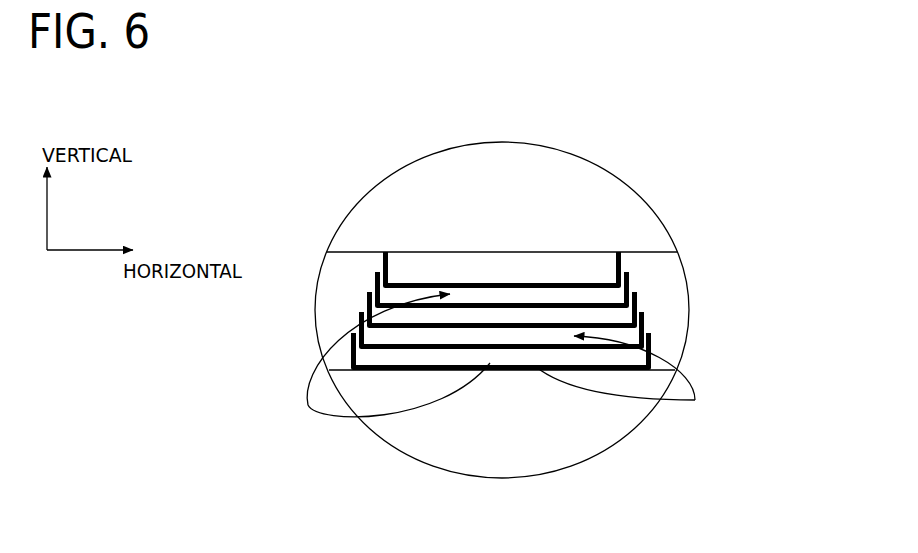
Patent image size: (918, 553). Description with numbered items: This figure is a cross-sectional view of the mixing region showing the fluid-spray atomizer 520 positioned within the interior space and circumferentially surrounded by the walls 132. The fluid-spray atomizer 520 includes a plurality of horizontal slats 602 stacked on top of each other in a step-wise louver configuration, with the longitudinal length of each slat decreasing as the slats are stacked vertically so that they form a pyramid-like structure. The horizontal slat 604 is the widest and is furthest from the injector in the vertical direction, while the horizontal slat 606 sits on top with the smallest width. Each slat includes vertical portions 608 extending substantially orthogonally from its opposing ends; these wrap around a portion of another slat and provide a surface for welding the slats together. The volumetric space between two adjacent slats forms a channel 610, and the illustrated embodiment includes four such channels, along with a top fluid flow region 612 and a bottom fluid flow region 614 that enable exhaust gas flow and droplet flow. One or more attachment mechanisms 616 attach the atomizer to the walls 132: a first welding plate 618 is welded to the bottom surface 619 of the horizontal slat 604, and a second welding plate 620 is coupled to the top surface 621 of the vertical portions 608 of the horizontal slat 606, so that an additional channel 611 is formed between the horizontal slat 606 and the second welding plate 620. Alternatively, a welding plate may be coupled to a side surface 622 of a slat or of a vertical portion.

The walls 132 is at (493, 142).
The fluid-spray atomizer 520 is at (748, 247).
The horizontal slats 602 is at (685, 280).
The horizontal slat 604 is at (527, 377).
The horizontal slat 606 is at (505, 283).
The vertical portions 608 is at (380, 267).
The channels 610 is at (504, 357).
The additional channel 611 is at (549, 270).
The top fluid flow region 612 is at (598, 192).
The bottom fluid flow region 614 is at (519, 456).
The attachment mechanisms 616 is at (321, 245).
The first welding plate 618 is at (346, 372).
The bottom surface 619 is at (448, 373).
The second welding plate 620 is at (474, 251).
The top surface 621 is at (385, 250).
The side surface 622 is at (656, 340).